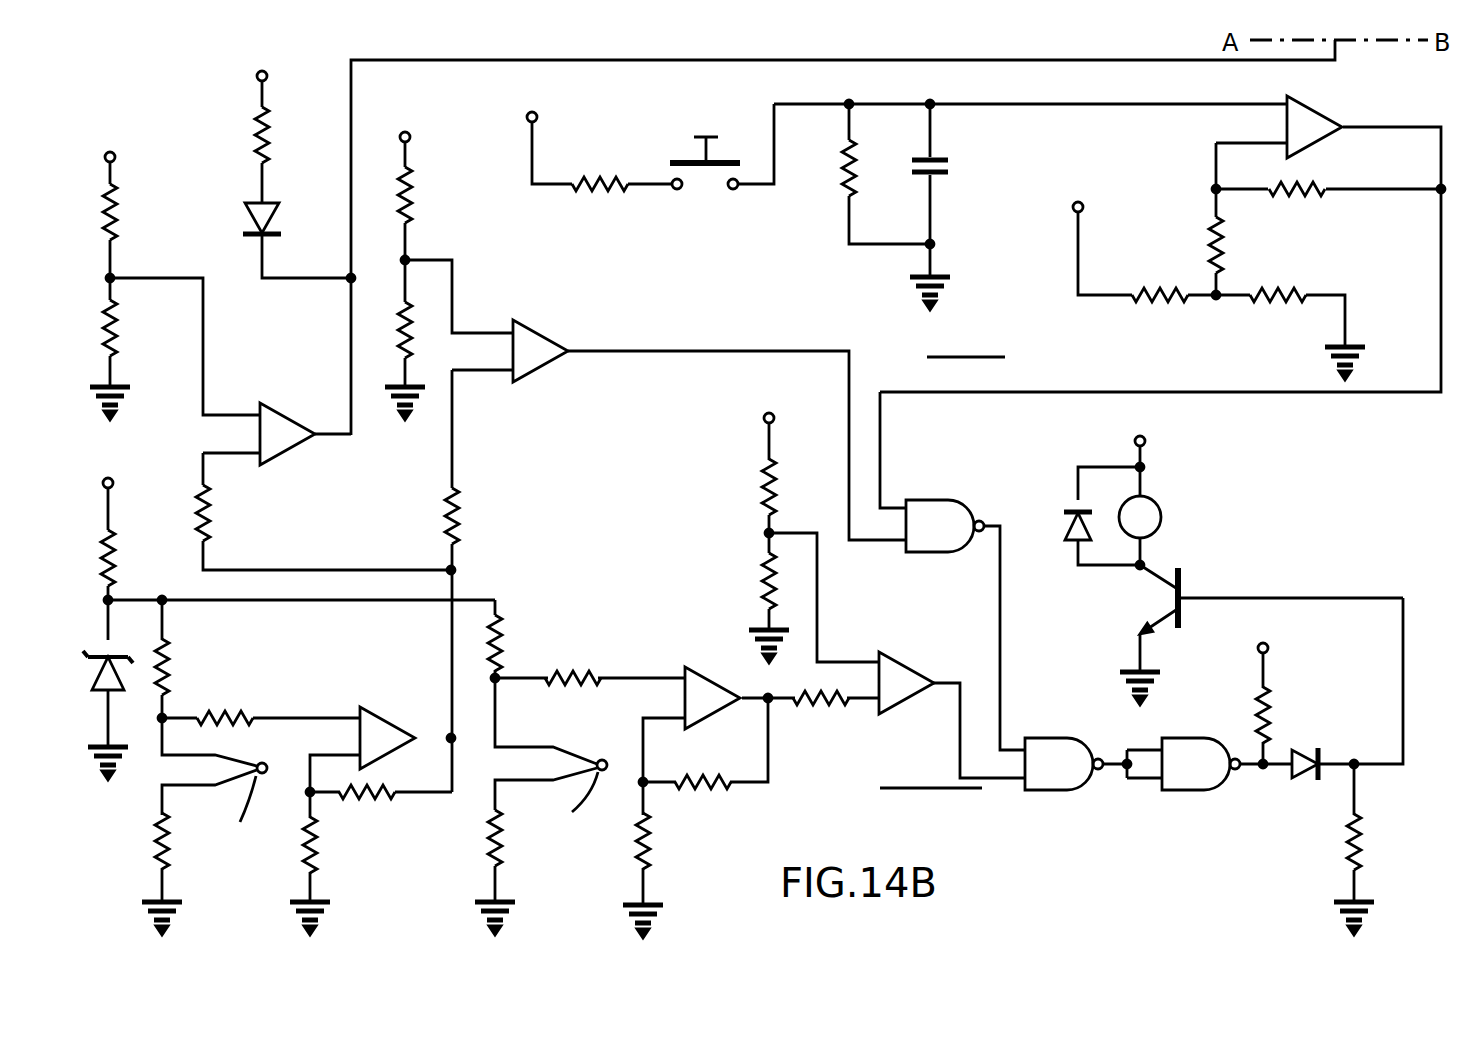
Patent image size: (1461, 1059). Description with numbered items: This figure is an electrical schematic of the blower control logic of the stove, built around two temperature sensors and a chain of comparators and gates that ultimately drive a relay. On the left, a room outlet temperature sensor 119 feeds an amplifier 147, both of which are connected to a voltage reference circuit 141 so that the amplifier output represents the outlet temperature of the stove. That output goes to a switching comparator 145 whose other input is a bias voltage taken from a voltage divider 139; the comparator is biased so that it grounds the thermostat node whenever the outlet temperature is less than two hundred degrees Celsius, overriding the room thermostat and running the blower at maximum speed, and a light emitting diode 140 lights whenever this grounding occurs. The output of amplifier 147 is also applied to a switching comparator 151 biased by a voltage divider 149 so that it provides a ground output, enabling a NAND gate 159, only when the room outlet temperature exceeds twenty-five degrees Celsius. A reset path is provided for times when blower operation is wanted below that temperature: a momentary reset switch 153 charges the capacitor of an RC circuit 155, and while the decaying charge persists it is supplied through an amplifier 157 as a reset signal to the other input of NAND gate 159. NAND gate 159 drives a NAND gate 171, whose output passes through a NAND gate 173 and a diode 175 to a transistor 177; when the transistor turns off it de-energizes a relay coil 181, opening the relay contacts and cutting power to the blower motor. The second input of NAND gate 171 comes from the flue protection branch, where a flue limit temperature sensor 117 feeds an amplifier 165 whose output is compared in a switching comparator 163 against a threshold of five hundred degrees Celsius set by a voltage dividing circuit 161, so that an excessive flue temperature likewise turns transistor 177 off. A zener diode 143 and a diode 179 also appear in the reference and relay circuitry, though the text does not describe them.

The flue limit temperature sensor 117 is at (598, 760).
The room outlet temperature sensor 119 is at (274, 757).
The voltage divider 139 is at (114, 276).
The light emitting diode 140 is at (252, 218).
The voltage reference circuit 141 is at (112, 598).
The zener diode 143 is at (122, 664).
The switching comparator 145 is at (284, 436).
The amplifier 147 is at (392, 740).
The voltage divider 149 is at (410, 258).
The switching comparator 151 is at (535, 336).
The reset switch 153 is at (693, 162).
The RC circuit 155 is at (898, 203).
The amplifier 157 is at (1312, 118).
The NAND gate 159 is at (928, 515).
The voltage dividing circuit 161 is at (766, 532).
The switching comparator 163 is at (905, 681).
The amplifier 165 is at (715, 690).
The NAND gate 171 is at (1055, 780).
The NAND gate 173 is at (1190, 780).
The diode 175 is at (1308, 782).
The transistor 177 is at (1184, 583).
The diode 179 is at (1072, 510).
The relay coil 181 is at (1150, 505).